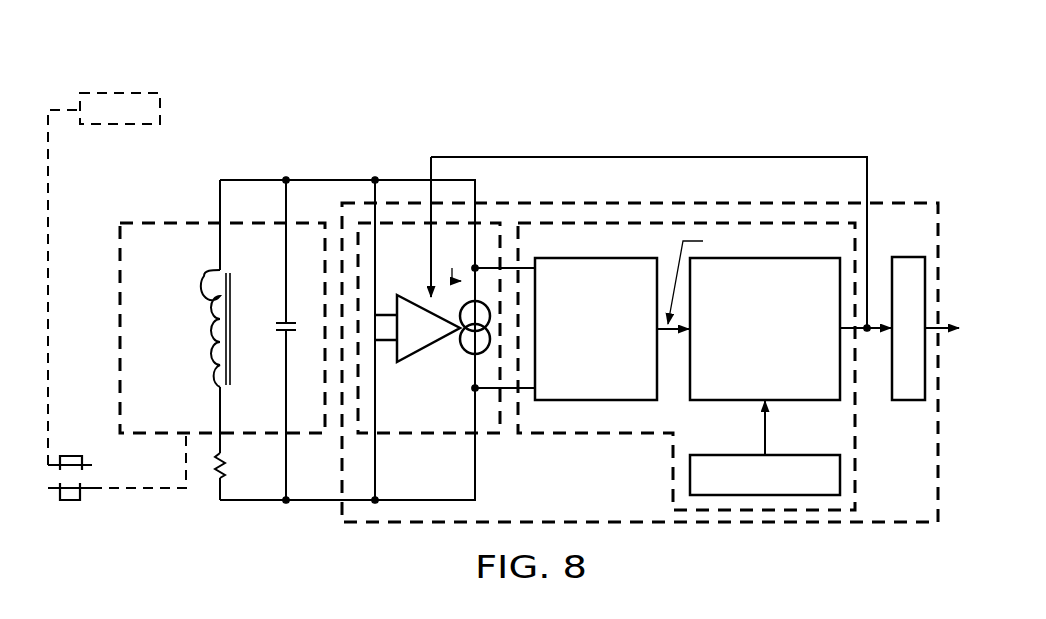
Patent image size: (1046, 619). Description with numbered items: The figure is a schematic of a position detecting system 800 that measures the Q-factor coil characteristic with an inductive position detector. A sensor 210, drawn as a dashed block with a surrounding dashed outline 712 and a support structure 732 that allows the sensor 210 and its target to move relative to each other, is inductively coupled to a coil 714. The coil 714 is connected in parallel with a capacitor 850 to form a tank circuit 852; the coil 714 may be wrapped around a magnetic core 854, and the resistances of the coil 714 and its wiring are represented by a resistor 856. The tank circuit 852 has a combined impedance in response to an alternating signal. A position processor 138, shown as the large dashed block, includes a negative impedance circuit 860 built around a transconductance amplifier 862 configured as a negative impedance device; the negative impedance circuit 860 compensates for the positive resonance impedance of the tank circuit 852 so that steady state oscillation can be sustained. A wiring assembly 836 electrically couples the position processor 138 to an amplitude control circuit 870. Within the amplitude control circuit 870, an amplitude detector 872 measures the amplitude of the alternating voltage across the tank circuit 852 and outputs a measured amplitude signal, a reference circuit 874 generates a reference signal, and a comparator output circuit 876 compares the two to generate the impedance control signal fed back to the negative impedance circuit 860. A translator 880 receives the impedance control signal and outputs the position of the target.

The position detecting system 800 is at (375, 82).
The sensor housing assembly 712 is at (110, 235).
The sensor 210 is at (182, 220).
The tank circuit 852 is at (260, 220).
The wiring assembly 836 is at (336, 179).
The capacitor 850 is at (273, 327).
The coil 714 is at (203, 330).
The core 854 is at (232, 366).
The resistor 856 is at (204, 466).
The support structure 732 is at (70, 503).
The transconductance amplifier 862 is at (426, 349).
The negative impedance circuit 860 is at (443, 434).
The amplitude control circuit 870 is at (610, 436).
The amplitude detector 872 is at (617, 371).
The reference circuit 874 is at (732, 455).
The comparator output circuit 876 is at (786, 367).
The translator 880 is at (908, 402).
The position processor 138 is at (665, 525).